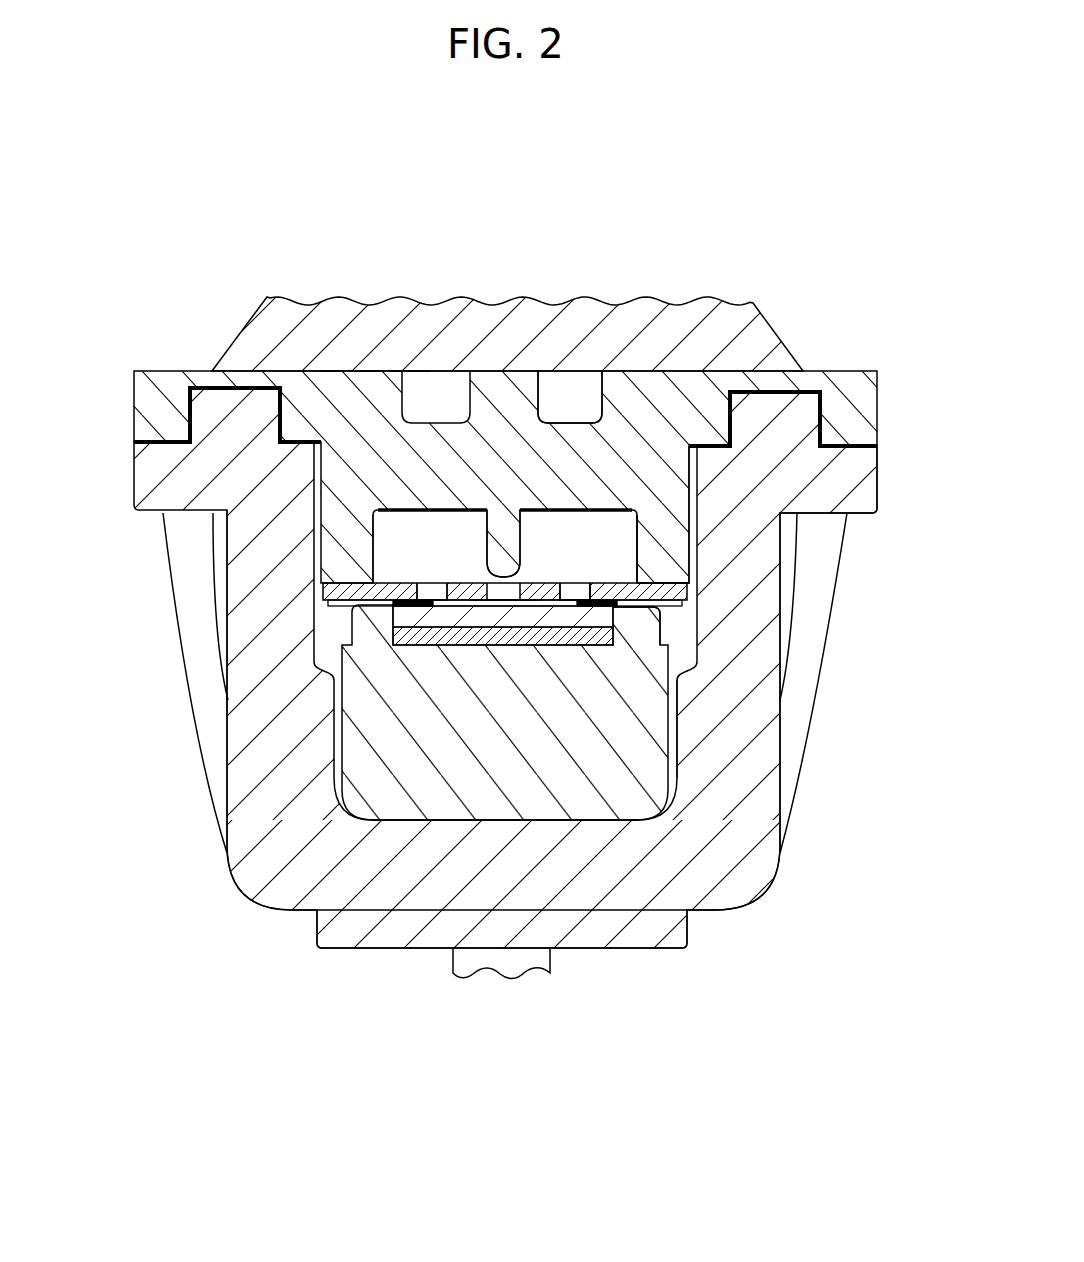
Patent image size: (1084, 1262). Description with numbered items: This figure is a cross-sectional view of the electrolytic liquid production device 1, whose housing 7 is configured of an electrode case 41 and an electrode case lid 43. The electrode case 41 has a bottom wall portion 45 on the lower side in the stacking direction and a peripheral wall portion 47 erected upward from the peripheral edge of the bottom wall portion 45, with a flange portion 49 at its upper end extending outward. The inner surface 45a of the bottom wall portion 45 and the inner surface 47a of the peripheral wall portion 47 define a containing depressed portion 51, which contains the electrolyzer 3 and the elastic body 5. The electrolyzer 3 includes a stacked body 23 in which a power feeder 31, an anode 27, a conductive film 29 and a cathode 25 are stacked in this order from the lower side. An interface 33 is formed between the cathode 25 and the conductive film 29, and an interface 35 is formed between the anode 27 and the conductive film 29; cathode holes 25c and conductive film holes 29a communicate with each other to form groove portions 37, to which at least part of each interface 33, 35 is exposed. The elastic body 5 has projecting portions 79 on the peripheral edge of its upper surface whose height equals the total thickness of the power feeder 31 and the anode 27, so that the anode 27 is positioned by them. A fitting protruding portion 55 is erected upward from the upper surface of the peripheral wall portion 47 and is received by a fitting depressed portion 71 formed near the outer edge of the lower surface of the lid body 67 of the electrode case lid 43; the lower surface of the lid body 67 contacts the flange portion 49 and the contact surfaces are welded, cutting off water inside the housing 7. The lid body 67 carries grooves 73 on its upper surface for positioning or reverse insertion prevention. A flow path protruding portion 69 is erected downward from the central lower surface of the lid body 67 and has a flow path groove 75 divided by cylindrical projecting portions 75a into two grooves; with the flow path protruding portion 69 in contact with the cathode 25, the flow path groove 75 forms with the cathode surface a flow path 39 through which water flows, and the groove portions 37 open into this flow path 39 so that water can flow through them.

The electrolytic liquid production device 1 is at (146, 196).
The electrolyzer 3 is at (366, 514).
The elastic body 5 is at (530, 812).
The housing 7 is at (509, 643).
The stacked body 23 is at (130, 603).
The cathode 25 is at (350, 590).
The cathode holes 25c is at (418, 600).
The anode 27 is at (433, 620).
The conductive film 29 is at (390, 607).
The conductive film holes 29a is at (502, 604).
The power feeder 31 is at (453, 630).
The interface 33 is at (590, 597).
The interface 35 is at (577, 604).
The groove portions 37 is at (567, 590).
The flow path 39 is at (416, 549).
The electrode case 41 is at (863, 515).
The electrode case lid 43 is at (852, 383).
The bottom wall portion 45 is at (452, 875).
The inner surface of bottom wall portion 45a is at (513, 761).
The peripheral wall portion 47 is at (742, 777).
The inner surface of peripheral wall portion 47a is at (668, 763).
The flange portion 49 is at (958, 527).
The containing depressed portion 51 is at (345, 810).
The fitting protruding portion 55 is at (770, 410).
The lid body 67 is at (373, 392).
The flow path protruding portion 69 is at (663, 530).
The fitting depressed portion 71 is at (228, 387).
The grooves 73 is at (565, 398).
The flow path groove 75 is at (393, 510).
The cylindrical projecting portions 75a is at (503, 537).
The projecting portions 79 is at (640, 627).